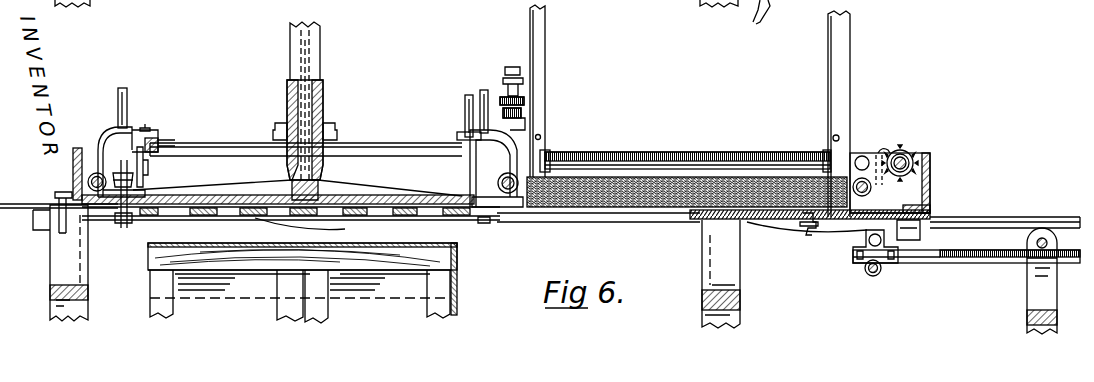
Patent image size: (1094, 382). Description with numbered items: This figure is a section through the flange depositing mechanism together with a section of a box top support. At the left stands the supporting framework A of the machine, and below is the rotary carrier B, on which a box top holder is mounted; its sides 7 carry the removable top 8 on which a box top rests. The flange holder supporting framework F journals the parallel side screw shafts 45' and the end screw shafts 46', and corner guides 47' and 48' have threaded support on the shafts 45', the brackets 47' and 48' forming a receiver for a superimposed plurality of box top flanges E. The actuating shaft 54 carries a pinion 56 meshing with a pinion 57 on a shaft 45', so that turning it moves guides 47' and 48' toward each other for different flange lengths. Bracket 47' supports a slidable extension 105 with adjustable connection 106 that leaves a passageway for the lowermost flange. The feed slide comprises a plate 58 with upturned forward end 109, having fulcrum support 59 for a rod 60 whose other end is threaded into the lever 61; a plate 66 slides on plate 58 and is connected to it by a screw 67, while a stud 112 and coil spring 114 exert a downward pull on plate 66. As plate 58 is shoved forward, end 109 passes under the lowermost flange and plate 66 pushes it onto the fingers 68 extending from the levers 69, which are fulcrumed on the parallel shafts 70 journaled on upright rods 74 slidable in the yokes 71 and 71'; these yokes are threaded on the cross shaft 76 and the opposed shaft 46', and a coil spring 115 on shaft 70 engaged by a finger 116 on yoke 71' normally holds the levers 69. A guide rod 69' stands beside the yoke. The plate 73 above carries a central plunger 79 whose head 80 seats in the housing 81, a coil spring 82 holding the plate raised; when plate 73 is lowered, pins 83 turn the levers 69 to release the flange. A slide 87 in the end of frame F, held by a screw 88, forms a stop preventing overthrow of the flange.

The sides of the box top holder 7 is at (172, 310).
The removable top 8 is at (397, 262).
The side screw shaft 45' is at (685, 145).
The end screw shaft 46' is at (662, 184).
The corner guide 47' is at (559, 91).
The corner guide 48' is at (815, 114).
The actuating shaft 54 is at (927, 163).
The pinion 56 is at (906, 152).
The pinion 57 is at (882, 150).
The plate 58 is at (849, 219).
The fulcrum support 59 is at (862, 264).
The rod 60 is at (937, 264).
The lever 61 is at (1037, 293).
The plate 66 is at (890, 213).
The screw 67 is at (920, 234).
The fingers 68 is at (397, 214).
The lever 69 is at (450, 109).
The guide rod 69' is at (158, 167).
The parallel shaft 70 is at (381, 145).
The yoke 71 is at (585, 169).
The yoke 71' is at (264, 155).
The plate 73 is at (176, 196).
The upright rod 74 is at (128, 95).
The cross shaft 76 is at (98, 192).
The plunger 79 is at (323, 127).
The head 80 is at (321, 52).
The housing 81 is at (323, 102).
The coil spring 82 is at (285, 118).
The pin 83 is at (457, 135).
The slide 87 is at (10, 203).
The screw 88 is at (124, 229).
The slidable extension 105 is at (550, 153).
The adjustable connection 106 is at (525, 104).
The forward end 109 is at (700, 221).
The stud 112 is at (806, 235).
The coil spring 114 is at (806, 228).
The coil spring 115 is at (160, 140).
The finger 116 is at (150, 128).
The supporting framework A is at (53, 272).
The rotary carrier B is at (281, 290).
The box top flange E is at (538, 220).
The flange holder supporting framework F is at (73, 155).